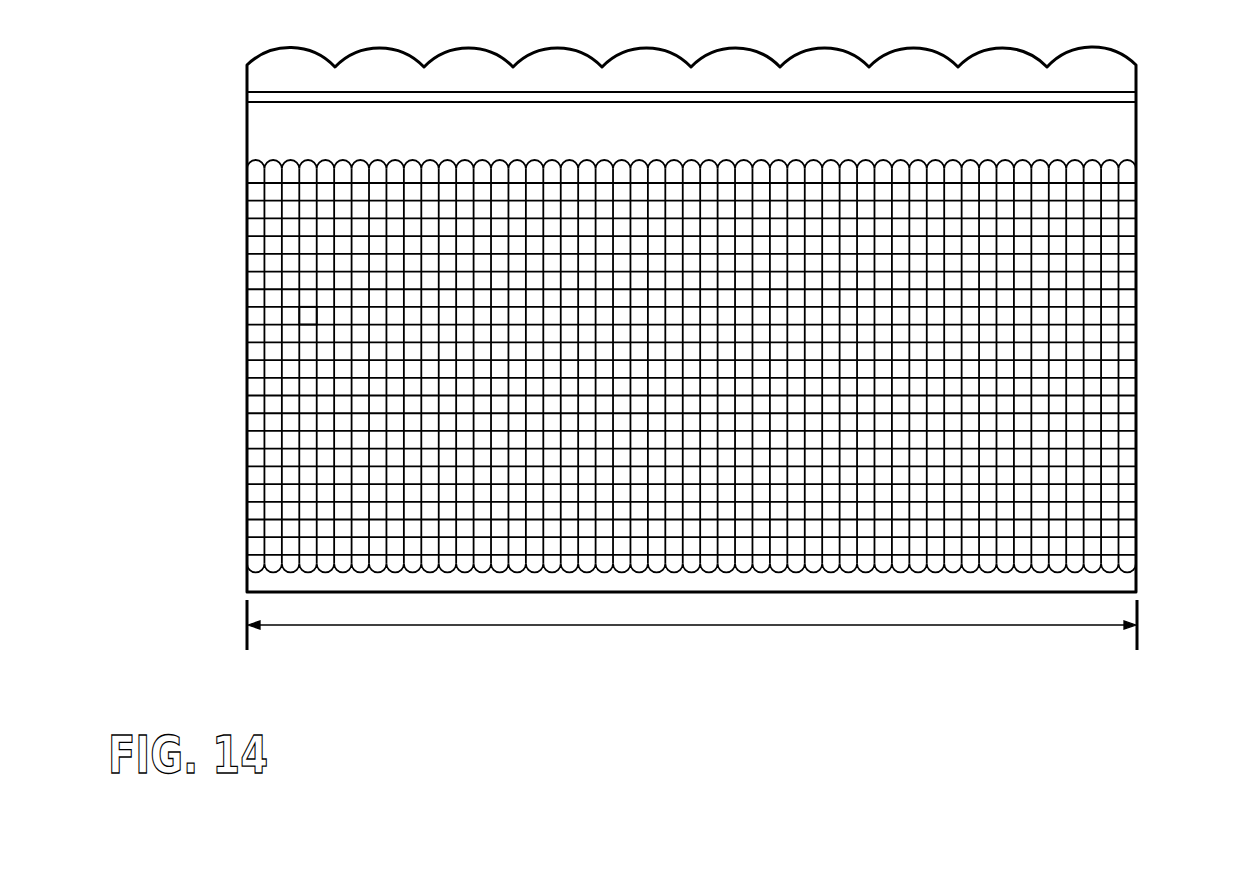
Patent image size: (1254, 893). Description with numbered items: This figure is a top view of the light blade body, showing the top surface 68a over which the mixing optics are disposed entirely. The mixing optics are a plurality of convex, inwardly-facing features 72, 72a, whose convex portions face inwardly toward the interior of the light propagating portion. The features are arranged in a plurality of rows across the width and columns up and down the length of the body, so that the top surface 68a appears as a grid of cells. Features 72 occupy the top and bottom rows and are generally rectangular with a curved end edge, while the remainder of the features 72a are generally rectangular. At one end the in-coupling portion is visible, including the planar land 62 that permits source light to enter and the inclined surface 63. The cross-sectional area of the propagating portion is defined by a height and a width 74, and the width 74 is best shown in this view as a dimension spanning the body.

The planar land 62 is at (1102, 82).
The inclined surface 63 is at (1125, 97).
The features 72 is at (746, 350).
The features 72a is at (1125, 191).
The top surface 68a is at (310, 322).
The width 74 is at (670, 625).